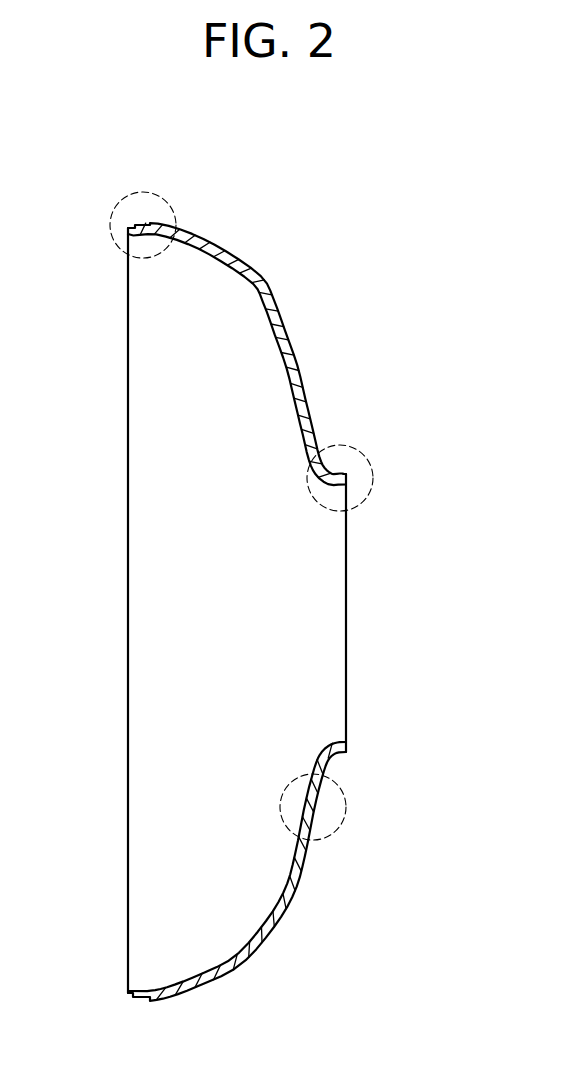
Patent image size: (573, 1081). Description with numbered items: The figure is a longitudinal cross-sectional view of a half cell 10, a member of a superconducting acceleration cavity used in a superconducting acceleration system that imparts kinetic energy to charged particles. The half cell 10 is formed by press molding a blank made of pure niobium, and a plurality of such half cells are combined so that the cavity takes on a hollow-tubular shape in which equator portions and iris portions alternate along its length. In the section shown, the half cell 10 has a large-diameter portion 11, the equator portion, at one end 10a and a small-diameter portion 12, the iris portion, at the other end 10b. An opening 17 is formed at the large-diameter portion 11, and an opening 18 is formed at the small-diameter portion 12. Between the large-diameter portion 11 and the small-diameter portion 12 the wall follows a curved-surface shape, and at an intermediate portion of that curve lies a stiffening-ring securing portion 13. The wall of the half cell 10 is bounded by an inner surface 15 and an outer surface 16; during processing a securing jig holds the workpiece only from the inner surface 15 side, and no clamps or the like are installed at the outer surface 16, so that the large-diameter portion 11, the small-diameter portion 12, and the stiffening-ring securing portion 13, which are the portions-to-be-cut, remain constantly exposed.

The half cell 10 is at (396, 356).
The one end 10a is at (129, 390).
The other end 10b is at (347, 575).
The large-diameter portion 11 is at (143, 191).
The small-diameter portion 12 is at (373, 469).
The stiffening-ring securing portion 13 is at (346, 797).
The inner surface 15 is at (216, 258).
The outer surface 16 is at (254, 268).
The opening 17 is at (140, 989).
The opening 18 is at (344, 741).